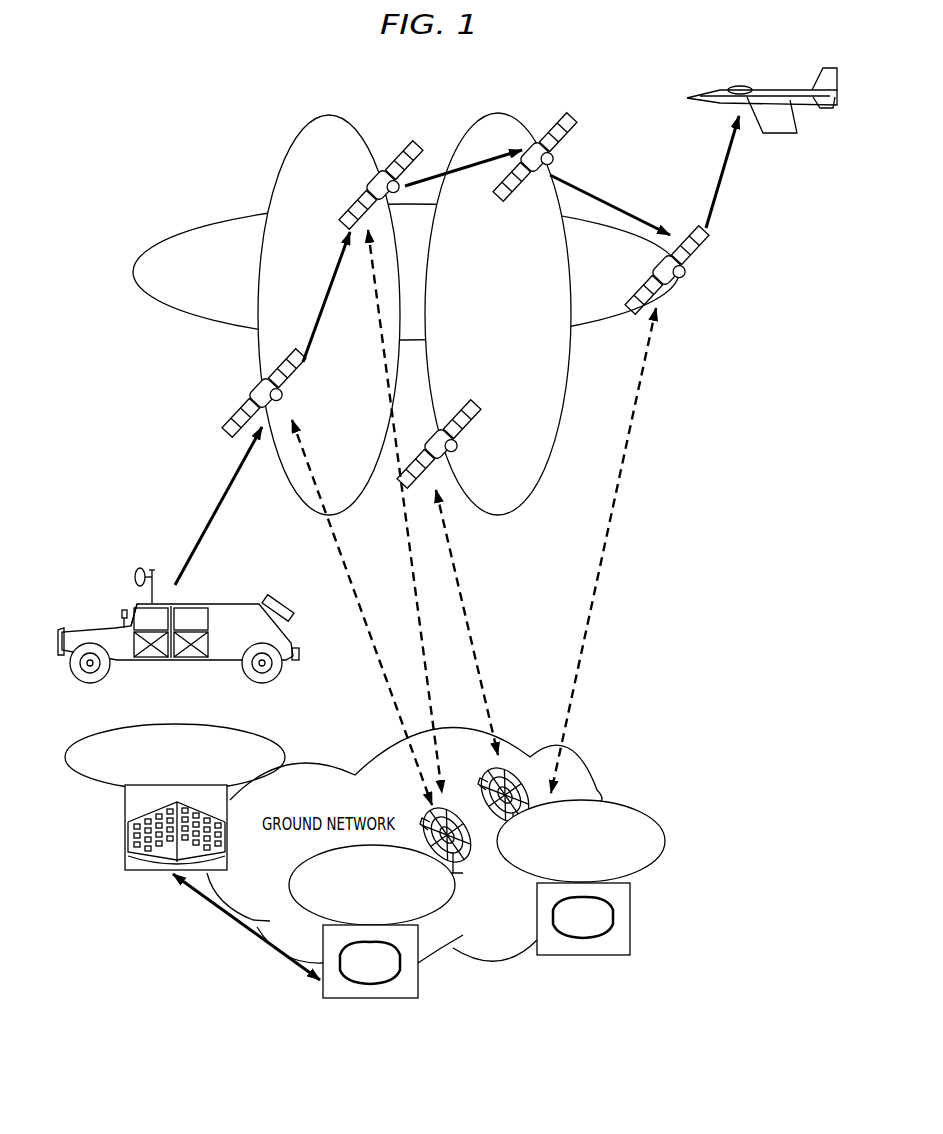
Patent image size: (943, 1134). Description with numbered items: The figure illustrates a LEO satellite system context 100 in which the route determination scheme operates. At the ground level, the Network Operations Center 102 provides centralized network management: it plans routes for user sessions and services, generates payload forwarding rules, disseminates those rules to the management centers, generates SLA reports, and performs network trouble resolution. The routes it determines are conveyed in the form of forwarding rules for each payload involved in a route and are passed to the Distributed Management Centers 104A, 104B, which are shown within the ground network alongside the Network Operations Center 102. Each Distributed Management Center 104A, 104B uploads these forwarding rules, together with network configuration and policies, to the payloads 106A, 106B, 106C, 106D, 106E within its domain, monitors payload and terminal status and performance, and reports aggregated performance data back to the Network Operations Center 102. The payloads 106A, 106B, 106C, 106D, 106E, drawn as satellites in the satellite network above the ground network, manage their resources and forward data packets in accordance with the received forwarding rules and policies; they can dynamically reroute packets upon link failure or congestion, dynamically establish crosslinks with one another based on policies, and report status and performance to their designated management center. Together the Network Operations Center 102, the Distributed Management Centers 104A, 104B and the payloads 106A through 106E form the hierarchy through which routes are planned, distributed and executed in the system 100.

The LEO satellite system context 100 is at (712, 356).
The Network Operations Center 102 is at (78, 737).
The Distributed Management Center 104A is at (290, 900).
The Distributed Management Center 104B is at (661, 818).
The payload 106A is at (290, 401).
The payload 106B is at (372, 180).
The payload 106C is at (462, 451).
The payload 106D is at (560, 166).
The payload 106E is at (692, 285).